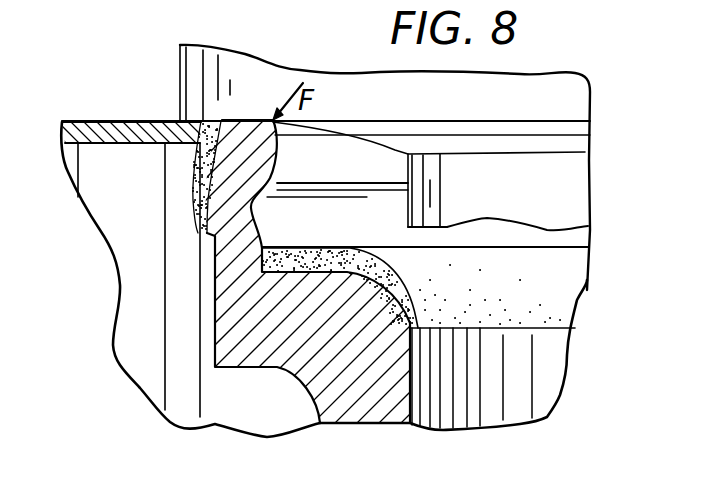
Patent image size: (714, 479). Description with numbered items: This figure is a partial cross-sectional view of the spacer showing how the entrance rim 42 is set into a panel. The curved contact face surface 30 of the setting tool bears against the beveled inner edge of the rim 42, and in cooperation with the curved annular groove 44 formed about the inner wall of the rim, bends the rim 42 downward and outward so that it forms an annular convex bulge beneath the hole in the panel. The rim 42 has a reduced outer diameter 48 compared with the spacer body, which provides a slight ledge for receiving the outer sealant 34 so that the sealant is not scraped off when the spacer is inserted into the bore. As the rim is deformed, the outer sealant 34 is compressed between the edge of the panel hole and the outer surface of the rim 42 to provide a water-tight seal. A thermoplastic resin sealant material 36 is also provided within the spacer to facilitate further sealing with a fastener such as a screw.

The curved contact face surface 30 is at (180, 63).
The outer diameter 48 is at (198, 120).
The outer sealant 34 is at (195, 185).
The entrance rim 42 is at (230, 245).
The curved annular groove 44 is at (252, 217).
The thermoplastic resin sealant material 36 is at (403, 283).